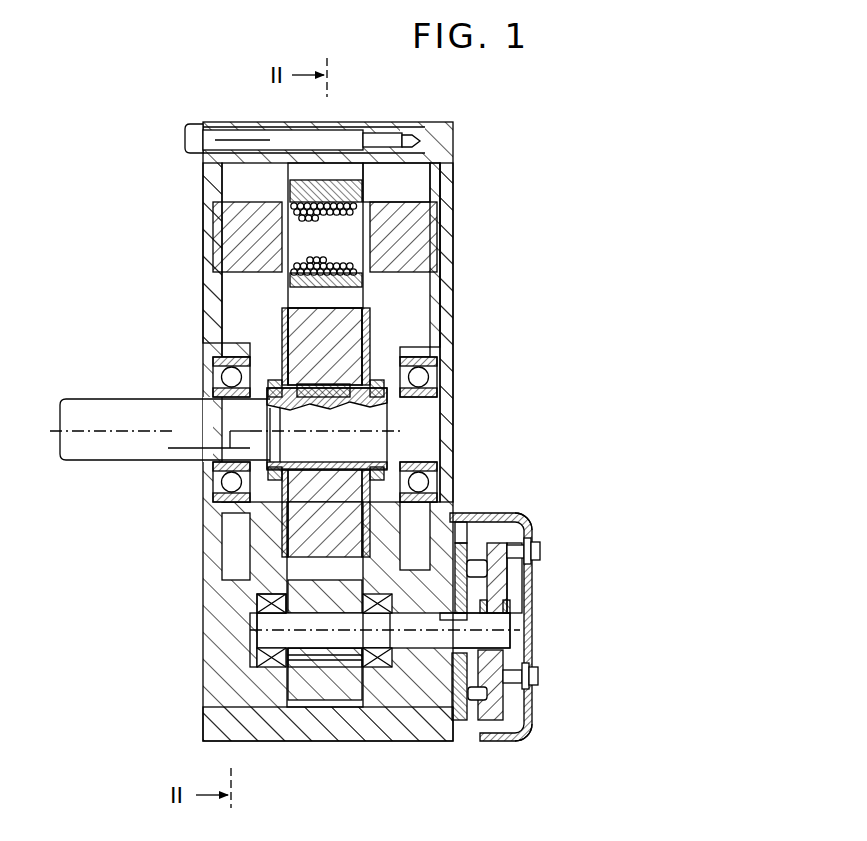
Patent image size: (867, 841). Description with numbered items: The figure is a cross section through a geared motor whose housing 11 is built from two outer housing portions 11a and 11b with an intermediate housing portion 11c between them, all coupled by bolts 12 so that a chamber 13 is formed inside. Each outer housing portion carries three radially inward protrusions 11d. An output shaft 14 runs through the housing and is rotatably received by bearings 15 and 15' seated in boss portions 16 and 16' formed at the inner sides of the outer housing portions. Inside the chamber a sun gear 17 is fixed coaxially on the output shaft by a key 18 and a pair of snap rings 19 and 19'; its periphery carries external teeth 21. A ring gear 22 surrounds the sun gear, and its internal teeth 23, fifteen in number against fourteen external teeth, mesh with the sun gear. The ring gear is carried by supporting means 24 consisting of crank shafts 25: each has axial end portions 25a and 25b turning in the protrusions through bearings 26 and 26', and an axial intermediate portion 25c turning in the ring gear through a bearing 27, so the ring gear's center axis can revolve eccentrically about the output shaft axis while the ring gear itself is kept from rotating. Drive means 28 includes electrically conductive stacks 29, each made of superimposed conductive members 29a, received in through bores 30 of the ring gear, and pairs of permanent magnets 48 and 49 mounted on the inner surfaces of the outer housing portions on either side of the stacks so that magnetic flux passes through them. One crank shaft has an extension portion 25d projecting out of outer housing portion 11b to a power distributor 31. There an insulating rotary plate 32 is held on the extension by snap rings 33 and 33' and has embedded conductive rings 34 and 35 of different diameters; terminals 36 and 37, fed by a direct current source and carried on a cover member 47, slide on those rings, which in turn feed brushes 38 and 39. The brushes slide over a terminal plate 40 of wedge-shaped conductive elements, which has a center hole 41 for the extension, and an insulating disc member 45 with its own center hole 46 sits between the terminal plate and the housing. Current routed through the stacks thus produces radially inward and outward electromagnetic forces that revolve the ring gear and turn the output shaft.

The housing 11 is at (332, 437).
The outer housing portion 11a is at (210, 300).
The outer housing portion 11b is at (453, 312).
The intermediate housing portion 11c is at (320, 742).
The protrusions 11d is at (244, 576).
The bolts 12 is at (188, 140).
The chamber 13 is at (266, 331).
The output shaft 14 is at (121, 410).
The bearing 15 is at (208, 370).
The bearing 15' is at (444, 371).
The boss portion 16 is at (210, 498).
The boss portion 16' is at (418, 503).
The sun gear 17 is at (325, 427).
The key 18 is at (335, 398).
The snap ring 19 is at (266, 410).
The snap ring 19' is at (385, 410).
The external teeth 21 is at (362, 302).
The internal teeth 23 is at (325, 346).
The ring gear 22 is at (290, 190).
The supporting means 24 is at (258, 605).
The crank shafts 25 is at (374, 657).
The axial end portion 25a is at (258, 668).
The axial end portion 25b is at (378, 668).
The axial intermediate portion 25c is at (320, 683).
The extension portion 25d is at (512, 630).
The bearing 26 is at (268, 583).
The bearing 26' is at (384, 610).
The bearing 27 is at (325, 660).
The drive means 28 is at (374, 183).
The electrically conductive stacks 29 is at (294, 235).
The electrically conductive members 29a is at (290, 281).
The through bores 30 is at (318, 262).
The power distributor 31 is at (503, 613).
The rotary plate 32 is at (516, 583).
The snap ring 33 is at (491, 596).
The snap ring 33' is at (527, 601).
The electrically conductive ring 34 is at (540, 516).
The electrically conductive ring 35 is at (505, 700).
The terminal 36 is at (541, 550).
The terminal 37 is at (538, 680).
The brush 38 is at (478, 562).
The brush 39 is at (480, 700).
The terminal plate 40 is at (462, 545).
The center hole 41 is at (460, 620).
The electrically insulating disc member 45 is at (455, 725).
The center hole 46 is at (455, 616).
The cover member 47 is at (528, 738).
The permanent magnet 48 is at (216, 222).
The permanent magnet 49 is at (436, 232).